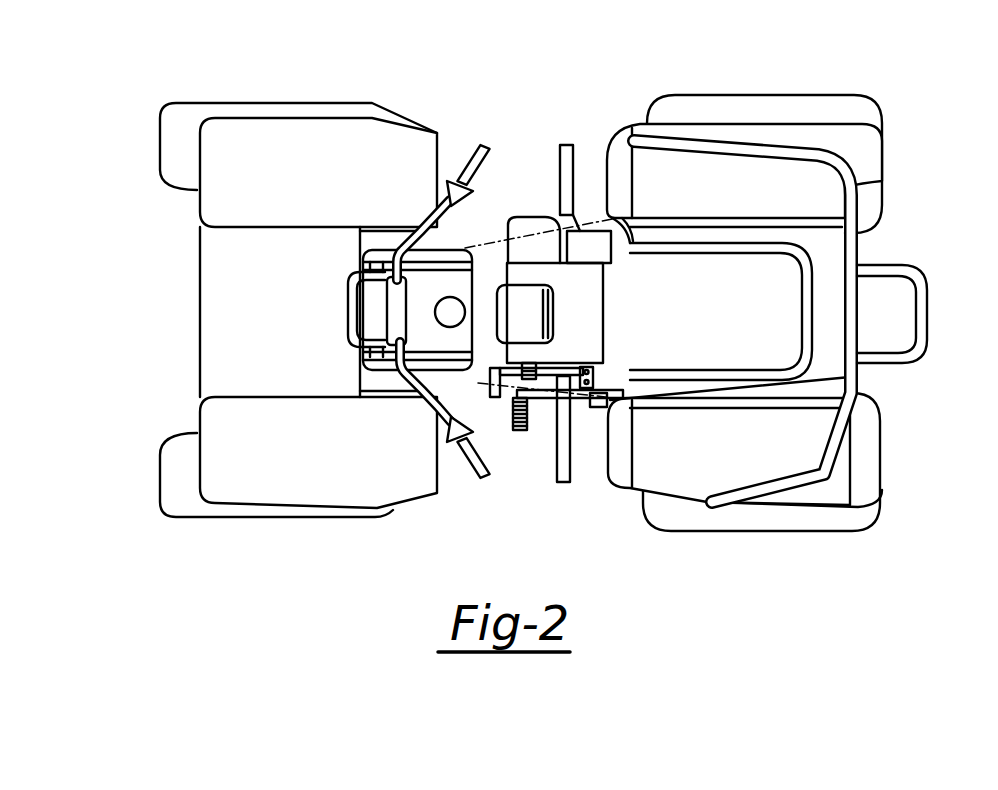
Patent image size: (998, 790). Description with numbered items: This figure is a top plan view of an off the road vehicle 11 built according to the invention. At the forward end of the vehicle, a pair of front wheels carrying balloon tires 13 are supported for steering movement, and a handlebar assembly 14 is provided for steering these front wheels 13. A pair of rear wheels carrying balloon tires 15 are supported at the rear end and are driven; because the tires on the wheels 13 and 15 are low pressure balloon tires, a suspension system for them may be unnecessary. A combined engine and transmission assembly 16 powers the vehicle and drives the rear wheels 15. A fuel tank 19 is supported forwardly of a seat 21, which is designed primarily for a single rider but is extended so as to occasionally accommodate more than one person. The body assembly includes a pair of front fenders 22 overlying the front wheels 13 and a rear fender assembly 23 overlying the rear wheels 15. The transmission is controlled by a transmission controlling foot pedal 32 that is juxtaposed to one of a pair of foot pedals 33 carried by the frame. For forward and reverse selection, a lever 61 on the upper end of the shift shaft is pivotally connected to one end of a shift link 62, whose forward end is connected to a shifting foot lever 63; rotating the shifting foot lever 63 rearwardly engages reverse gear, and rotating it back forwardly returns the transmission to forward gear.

The off the road vehicle 11 is at (431, 513).
The front wheels carrying balloon tires 13 is at (163, 176).
The handlebar assembly 14 is at (478, 149).
The rear wheels carrying balloon tires 15 is at (842, 96).
The combined engine and transmission assembly 16 is at (530, 274).
The fuel tank 19 is at (452, 226).
The seat 21 is at (733, 250).
The front fenders 22 is at (198, 215).
The rear fender assembly 23 is at (883, 184).
The transmission controlling foot pedal 32 is at (518, 432).
The foot pedals 33 is at (563, 146).
The lever 61 is at (594, 376).
The shift link 62 is at (552, 367).
The shifting foot lever 63 is at (495, 400).